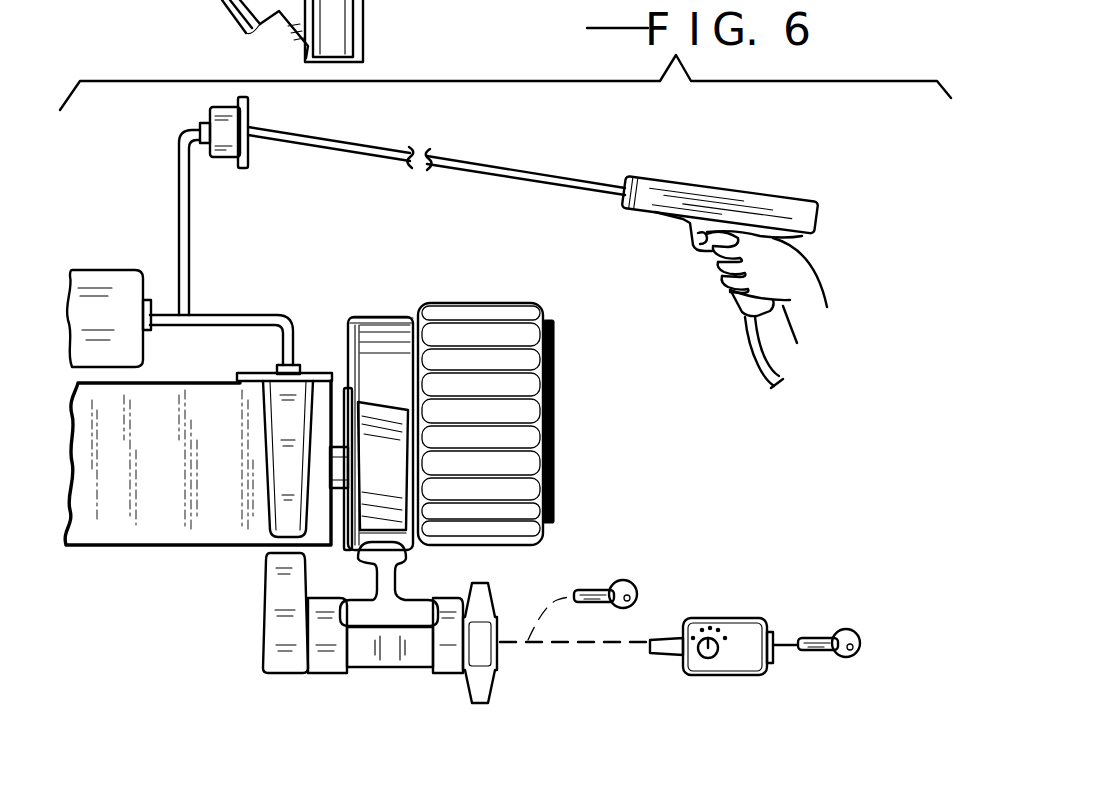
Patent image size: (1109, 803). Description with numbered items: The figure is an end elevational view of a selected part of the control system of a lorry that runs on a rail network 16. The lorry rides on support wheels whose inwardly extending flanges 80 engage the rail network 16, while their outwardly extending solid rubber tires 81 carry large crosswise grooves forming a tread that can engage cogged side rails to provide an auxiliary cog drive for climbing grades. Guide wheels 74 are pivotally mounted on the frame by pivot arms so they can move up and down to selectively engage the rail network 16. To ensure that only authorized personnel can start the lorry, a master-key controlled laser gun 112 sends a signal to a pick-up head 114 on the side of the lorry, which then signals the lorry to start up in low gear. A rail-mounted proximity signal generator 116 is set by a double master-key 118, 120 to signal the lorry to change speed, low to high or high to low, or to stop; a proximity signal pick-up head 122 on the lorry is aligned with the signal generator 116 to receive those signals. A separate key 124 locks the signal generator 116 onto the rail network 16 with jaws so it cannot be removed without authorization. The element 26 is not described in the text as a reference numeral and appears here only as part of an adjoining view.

The bracket fitting 26 is at (364, 20).
The pick-up head 114 is at (252, 122).
The master-key controlled laser gun 112 is at (742, 187).
The inwardly extending flanges 80 is at (383, 318).
The solid rubber tires 81 is at (493, 302).
The guide wheels 74 is at (375, 400).
The proximity signal pick-up head 122 is at (262, 418).
The rail network 16 is at (404, 549).
The rail-mounted proximity signal generator 116 is at (327, 675).
The key 124 is at (598, 585).
The double master-key 118 is at (725, 618).
The double master-key 120 is at (813, 635).